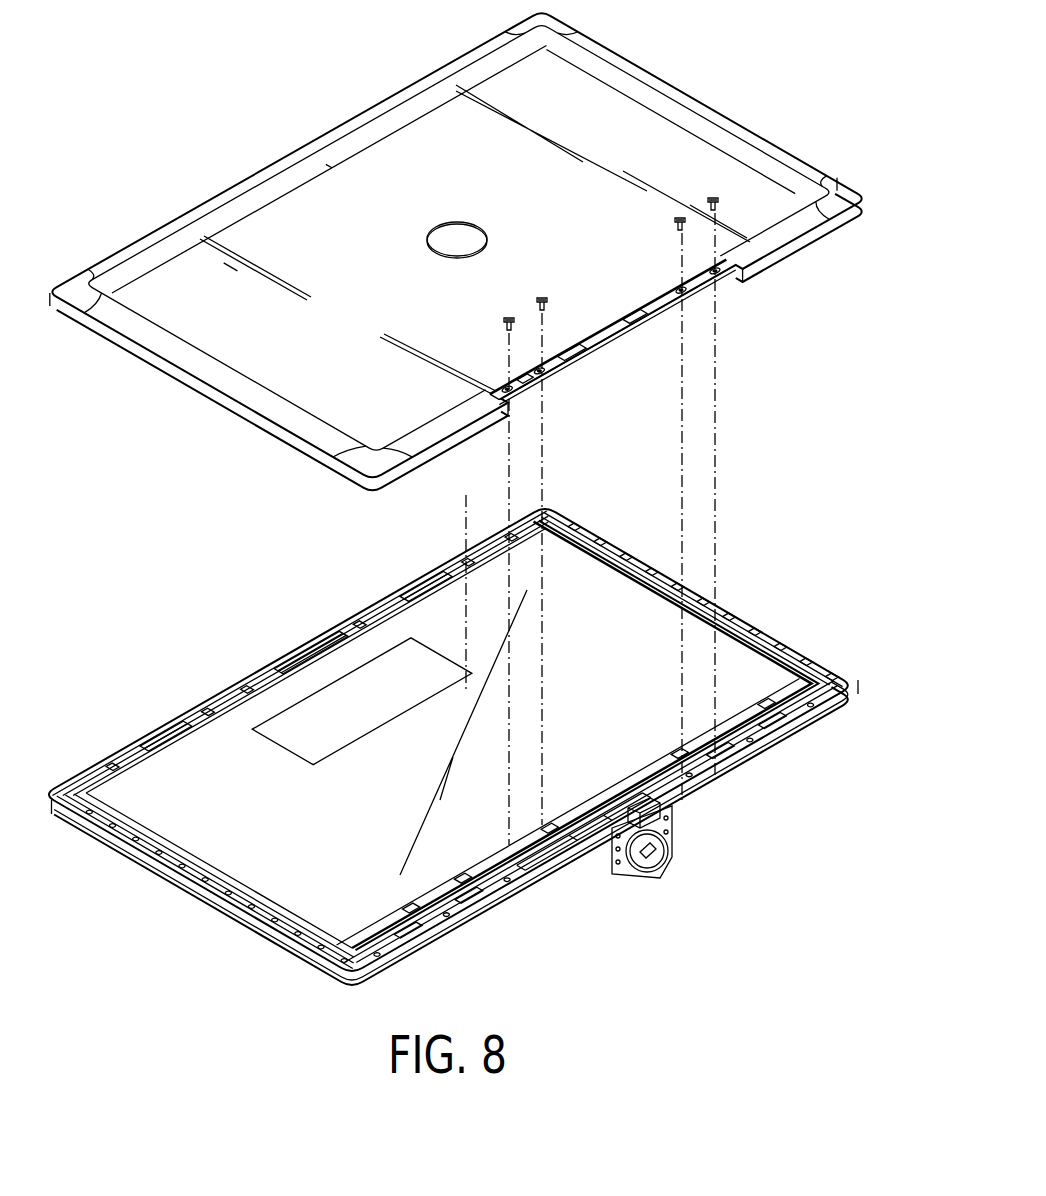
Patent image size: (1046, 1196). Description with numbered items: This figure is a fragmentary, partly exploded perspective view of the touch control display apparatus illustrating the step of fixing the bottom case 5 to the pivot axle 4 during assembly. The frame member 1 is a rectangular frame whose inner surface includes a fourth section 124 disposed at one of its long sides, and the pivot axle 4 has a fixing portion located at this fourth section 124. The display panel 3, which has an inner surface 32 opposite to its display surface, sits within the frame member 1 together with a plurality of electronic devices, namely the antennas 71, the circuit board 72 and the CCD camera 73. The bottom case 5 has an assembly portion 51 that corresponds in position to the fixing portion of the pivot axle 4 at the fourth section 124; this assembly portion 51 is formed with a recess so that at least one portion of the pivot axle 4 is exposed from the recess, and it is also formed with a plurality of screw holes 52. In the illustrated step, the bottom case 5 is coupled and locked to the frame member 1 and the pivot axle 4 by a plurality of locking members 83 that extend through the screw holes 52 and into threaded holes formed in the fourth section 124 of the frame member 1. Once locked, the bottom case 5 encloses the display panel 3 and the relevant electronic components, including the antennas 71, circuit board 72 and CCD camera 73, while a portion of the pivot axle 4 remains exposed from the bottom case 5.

The frame member 1 is at (451, 741).
The display panel 3 is at (446, 713).
The inner surface 32 is at (582, 588).
The pivot axle 4 is at (641, 862).
The bottom case 5 is at (457, 252).
The assembly portion 51 is at (613, 355).
The screw holes 52 is at (552, 376).
The antennas 71 is at (425, 585).
The circuit board 72 is at (650, 808).
The CCD camera 73 is at (310, 645).
The locking members 83 is at (712, 200).
The fourth section 124 is at (476, 928).